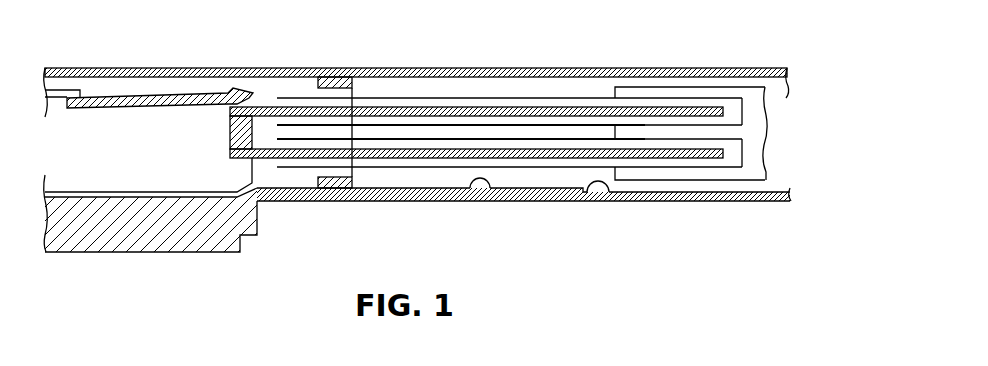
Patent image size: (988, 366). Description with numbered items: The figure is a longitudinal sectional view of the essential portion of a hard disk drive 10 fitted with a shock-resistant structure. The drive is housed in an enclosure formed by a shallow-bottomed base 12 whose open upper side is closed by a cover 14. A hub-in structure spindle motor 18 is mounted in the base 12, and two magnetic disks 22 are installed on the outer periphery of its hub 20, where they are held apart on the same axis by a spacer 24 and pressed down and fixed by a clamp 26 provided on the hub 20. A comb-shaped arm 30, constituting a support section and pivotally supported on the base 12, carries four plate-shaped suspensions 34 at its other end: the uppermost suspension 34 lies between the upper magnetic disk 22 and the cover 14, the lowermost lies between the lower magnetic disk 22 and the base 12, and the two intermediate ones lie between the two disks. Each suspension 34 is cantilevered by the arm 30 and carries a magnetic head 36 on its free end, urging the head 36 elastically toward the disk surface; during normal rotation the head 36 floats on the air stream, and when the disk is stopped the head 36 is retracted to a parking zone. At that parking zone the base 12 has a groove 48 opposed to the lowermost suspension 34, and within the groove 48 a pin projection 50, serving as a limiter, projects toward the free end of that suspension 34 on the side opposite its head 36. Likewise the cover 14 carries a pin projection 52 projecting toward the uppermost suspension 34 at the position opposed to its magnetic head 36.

The hard disk drive 10 is at (681, 41).
The base 12 is at (594, 193).
The cover 14 is at (597, 68).
The spindle motor 18 is at (97, 192).
The hub 20 is at (161, 178).
The magnetic disks 22 is at (526, 112).
The spacer 24 is at (231, 128).
The clamp 26 is at (129, 99).
The arm 30 is at (667, 202).
The suspensions 34 is at (483, 98).
The magnetic head 36 is at (320, 124).
The groove 48 is at (480, 179).
The pin projection 50 is at (340, 188).
The pin projection 52 is at (337, 73).